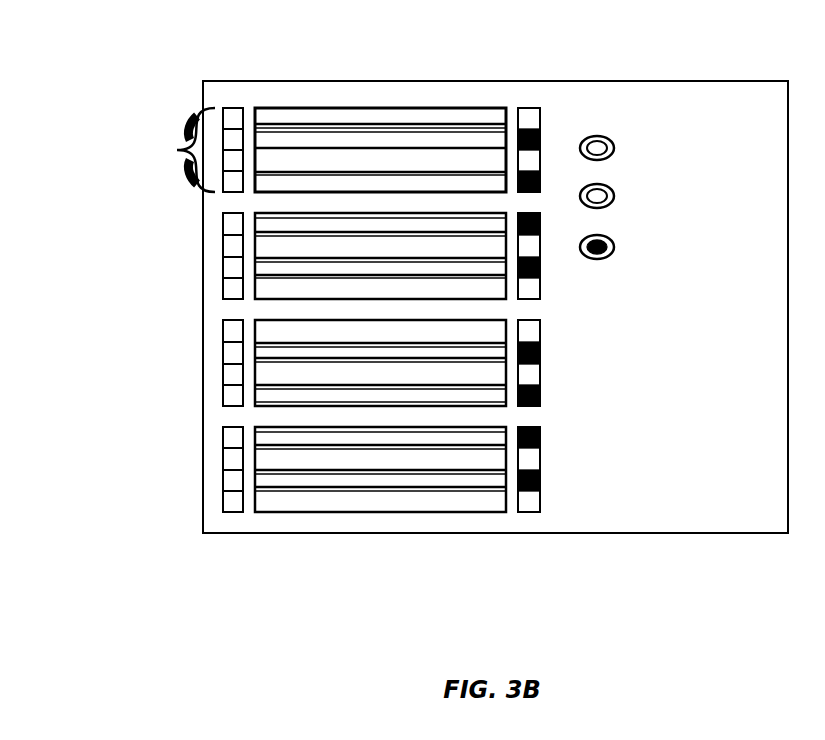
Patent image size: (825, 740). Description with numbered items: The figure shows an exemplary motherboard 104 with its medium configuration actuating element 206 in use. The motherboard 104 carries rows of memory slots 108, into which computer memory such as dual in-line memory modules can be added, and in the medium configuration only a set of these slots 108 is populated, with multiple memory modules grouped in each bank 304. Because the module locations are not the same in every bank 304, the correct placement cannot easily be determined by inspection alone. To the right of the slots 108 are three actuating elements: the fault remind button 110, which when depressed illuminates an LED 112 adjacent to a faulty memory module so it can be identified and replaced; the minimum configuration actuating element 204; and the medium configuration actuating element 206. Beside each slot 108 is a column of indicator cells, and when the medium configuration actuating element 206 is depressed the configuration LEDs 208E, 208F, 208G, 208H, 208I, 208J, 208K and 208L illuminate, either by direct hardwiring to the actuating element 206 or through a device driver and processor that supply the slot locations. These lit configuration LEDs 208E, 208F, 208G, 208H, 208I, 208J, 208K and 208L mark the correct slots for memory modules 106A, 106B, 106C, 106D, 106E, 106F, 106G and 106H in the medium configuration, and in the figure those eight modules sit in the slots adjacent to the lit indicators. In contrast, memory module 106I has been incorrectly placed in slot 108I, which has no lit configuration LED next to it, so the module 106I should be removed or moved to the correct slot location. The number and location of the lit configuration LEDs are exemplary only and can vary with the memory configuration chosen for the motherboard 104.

The motherboard 104 is at (495, 275).
The memory slot 108 is at (318, 511).
The memory module slot 108I is at (338, 108).
The LED 112 is at (223, 268).
The bank 304 is at (177, 150).
The memory module 106I is at (380, 118).
The memory module 106A is at (380, 138).
The memory module 106B is at (380, 181).
The memory module 106C is at (380, 227).
The memory module 106D is at (380, 268).
The memory module 106E is at (380, 352).
The memory module 106F is at (380, 394).
The memory module 106G is at (380, 440).
The memory module 106H is at (380, 480).
The configuration LED 208E is at (540, 140).
The configuration LED 208F is at (540, 186).
The configuration LED 208G is at (540, 227).
The configuration LED 208H is at (540, 278).
The configuration LED 208I is at (540, 356).
The configuration LED 208J is at (540, 398).
The configuration LED 208K is at (540, 440).
The configuration LED 208L is at (540, 485).
The fault remind button 110 is at (614, 148).
The minimum configuration actuating element 204 is at (614, 196).
The medium configuration actuating element 206 is at (614, 247).